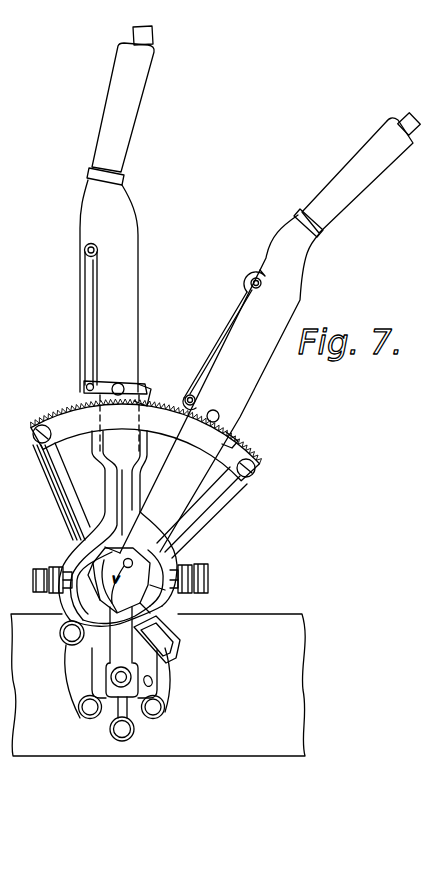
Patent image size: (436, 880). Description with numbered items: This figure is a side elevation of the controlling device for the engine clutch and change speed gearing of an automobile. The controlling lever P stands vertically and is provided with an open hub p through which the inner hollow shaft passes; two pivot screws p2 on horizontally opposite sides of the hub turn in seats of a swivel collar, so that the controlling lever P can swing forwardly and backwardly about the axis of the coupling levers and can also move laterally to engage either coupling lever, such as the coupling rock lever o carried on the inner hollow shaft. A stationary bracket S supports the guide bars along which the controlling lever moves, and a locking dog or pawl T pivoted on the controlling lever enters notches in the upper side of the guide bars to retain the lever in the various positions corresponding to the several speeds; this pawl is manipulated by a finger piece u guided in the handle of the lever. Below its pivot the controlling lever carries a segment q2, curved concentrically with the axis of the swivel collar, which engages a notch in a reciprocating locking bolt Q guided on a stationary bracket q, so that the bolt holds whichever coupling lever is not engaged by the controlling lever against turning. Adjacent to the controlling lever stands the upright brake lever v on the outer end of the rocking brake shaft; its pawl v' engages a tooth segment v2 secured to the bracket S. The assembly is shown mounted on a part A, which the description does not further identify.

The finger piece u is at (150, 37).
The controlling lever P is at (95, 292).
The locking dog or pawl T is at (147, 386).
The brake lever v is at (270, 333).
The pawl v' is at (224, 351).
The tooth segment v2 is at (242, 446).
The stationary bracket S is at (50, 485).
The coupling rock lever o is at (114, 502).
The pivot screws p2 is at (34, 569).
The open hub p is at (178, 605).
The base plate A is at (305, 735).
The stationary bracket q is at (102, 718).
The locking bolt Q is at (150, 716).
The segment q2 is at (187, 657).